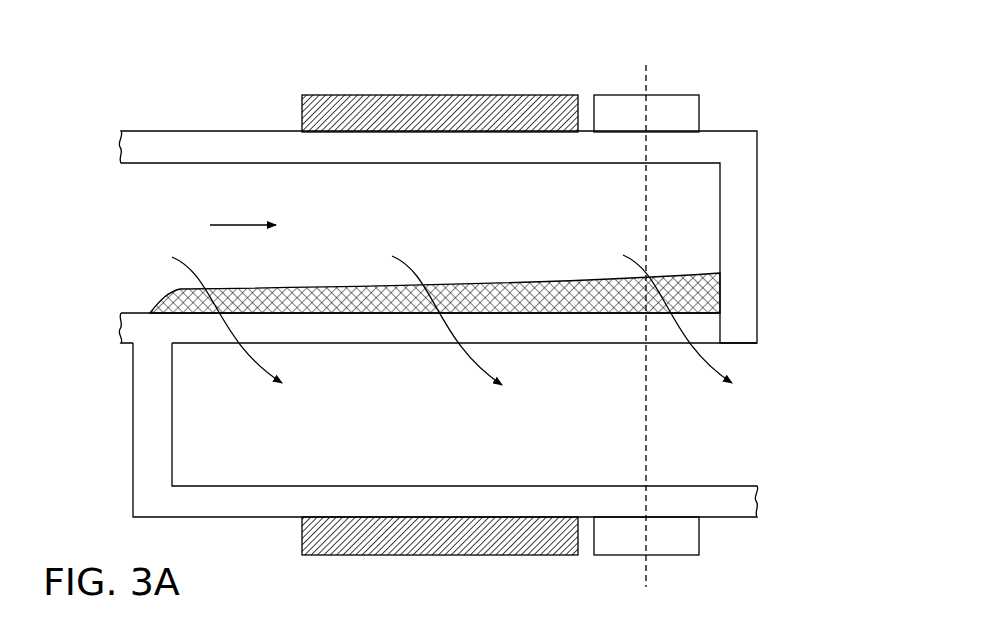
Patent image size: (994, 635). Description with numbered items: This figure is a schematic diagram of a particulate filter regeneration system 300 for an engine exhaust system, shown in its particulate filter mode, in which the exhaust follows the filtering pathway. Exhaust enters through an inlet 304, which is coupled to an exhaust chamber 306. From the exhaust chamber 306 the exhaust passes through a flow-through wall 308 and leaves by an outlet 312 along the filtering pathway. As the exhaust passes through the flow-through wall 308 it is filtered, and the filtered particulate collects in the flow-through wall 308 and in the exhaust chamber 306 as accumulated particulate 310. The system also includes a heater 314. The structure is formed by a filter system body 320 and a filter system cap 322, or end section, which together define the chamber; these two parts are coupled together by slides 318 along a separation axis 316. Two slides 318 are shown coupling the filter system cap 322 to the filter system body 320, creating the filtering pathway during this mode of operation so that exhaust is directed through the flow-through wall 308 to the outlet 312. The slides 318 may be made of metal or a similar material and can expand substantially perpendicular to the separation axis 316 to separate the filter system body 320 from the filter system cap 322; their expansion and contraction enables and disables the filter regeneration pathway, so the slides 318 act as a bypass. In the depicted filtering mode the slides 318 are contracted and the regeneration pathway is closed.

The particulate filter regeneration system 300 is at (192, 74).
The inlet 304 is at (97, 218).
The exhaust chamber 306 is at (452, 293).
The flow-through wall 308 is at (133, 453).
The accumulated particulate 310 is at (168, 295).
The outlet 312 is at (571, 419).
The heater 314 is at (538, 94).
The separation axis 316 is at (645, 65).
The slides 318 is at (682, 94).
The filter system body 320 is at (242, 129).
The filter system cap 322 is at (772, 249).